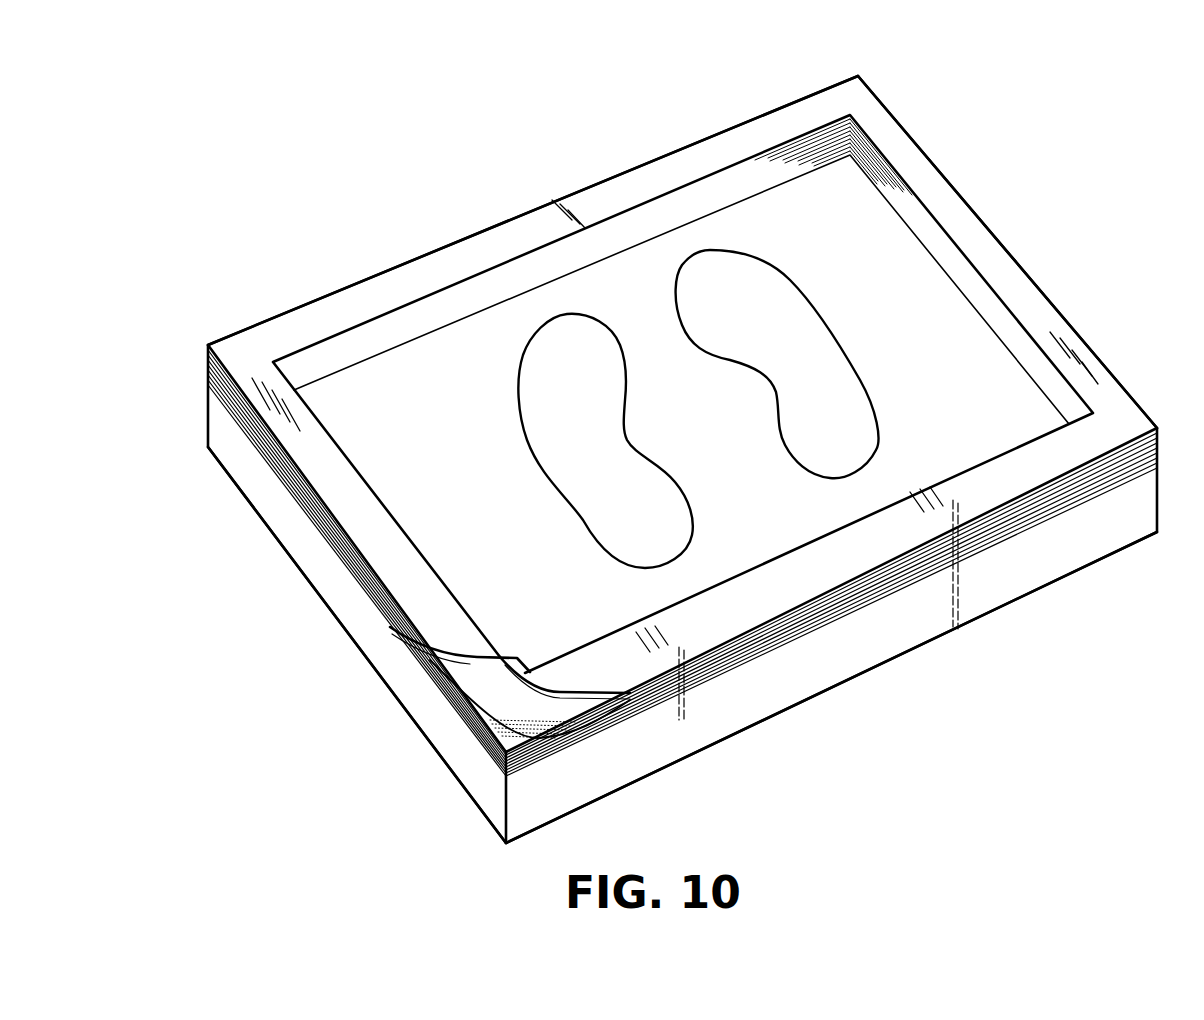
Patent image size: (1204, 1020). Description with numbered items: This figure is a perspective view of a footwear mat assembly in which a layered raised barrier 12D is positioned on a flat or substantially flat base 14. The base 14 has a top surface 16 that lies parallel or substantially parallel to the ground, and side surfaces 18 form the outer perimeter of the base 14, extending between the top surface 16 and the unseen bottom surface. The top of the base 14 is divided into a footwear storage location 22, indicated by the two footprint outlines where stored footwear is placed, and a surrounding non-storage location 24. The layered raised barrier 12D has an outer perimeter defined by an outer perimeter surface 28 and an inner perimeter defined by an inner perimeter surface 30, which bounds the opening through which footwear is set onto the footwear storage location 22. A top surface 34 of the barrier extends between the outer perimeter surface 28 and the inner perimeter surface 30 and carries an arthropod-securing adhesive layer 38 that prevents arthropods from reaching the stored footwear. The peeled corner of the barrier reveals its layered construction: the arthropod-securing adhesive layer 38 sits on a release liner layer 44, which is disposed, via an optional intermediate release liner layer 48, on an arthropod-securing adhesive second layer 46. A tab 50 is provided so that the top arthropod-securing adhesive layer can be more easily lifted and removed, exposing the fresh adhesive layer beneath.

The layered raised barrier 12D is at (936, 96).
The base 14 is at (895, 681).
The top surface 16 is at (432, 479).
The side surfaces 18 is at (1045, 563).
The footwear storage location 22 is at (562, 343).
The non-storage location 24 is at (898, 272).
The outer perimeter surface 28 is at (1062, 511).
The inner perimeter surface 30 is at (730, 180).
The top surface 34 is at (420, 255).
The arthropod-securing adhesive layer 38 is at (1002, 272).
The release liner layer 44 is at (515, 673).
The arthropod-securing adhesive second layer 46 is at (513, 740).
The intermediate release liner layer 48 is at (517, 730).
The tab 50 is at (500, 737).